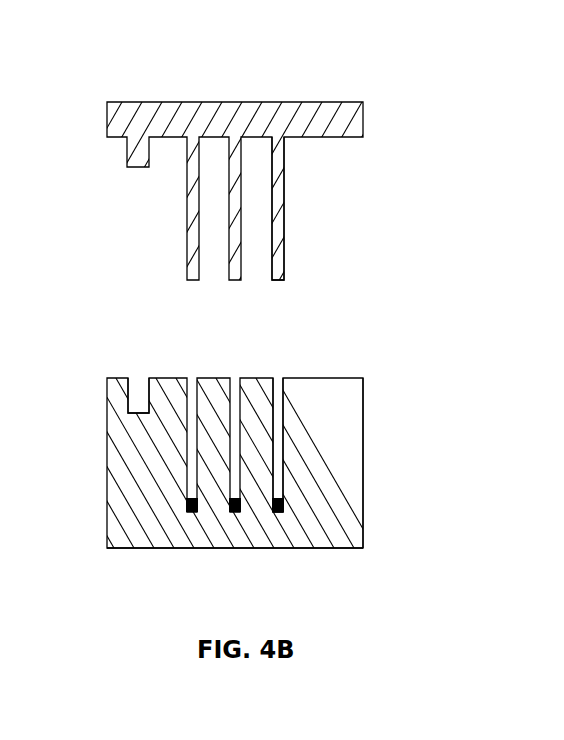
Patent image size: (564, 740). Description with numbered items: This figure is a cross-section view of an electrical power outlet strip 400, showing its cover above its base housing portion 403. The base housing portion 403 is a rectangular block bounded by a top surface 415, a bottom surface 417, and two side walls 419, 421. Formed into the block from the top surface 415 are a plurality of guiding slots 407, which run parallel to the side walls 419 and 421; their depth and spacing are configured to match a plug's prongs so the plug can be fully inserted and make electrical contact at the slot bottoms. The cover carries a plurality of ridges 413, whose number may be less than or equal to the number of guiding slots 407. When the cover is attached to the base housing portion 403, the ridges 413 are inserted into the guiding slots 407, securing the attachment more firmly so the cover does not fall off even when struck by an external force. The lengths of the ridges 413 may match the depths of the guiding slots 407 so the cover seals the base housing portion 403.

The electrical power outlet strip 400 is at (388, 76).
The base housing portion 403 is at (195, 198).
The ridges 413 is at (279, 272).
The side wall 419 is at (107, 462).
The top surface 415 is at (155, 378).
The guiding slots 407 is at (278, 389).
The side wall 421 is at (365, 455).
The bottom surface 417 is at (304, 548).